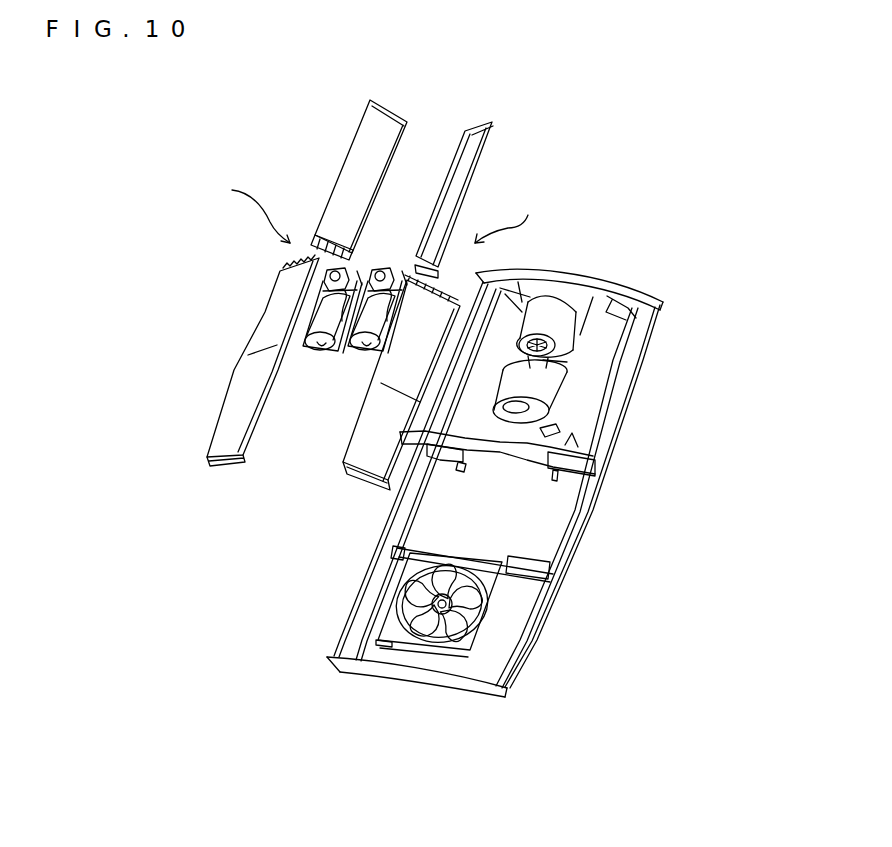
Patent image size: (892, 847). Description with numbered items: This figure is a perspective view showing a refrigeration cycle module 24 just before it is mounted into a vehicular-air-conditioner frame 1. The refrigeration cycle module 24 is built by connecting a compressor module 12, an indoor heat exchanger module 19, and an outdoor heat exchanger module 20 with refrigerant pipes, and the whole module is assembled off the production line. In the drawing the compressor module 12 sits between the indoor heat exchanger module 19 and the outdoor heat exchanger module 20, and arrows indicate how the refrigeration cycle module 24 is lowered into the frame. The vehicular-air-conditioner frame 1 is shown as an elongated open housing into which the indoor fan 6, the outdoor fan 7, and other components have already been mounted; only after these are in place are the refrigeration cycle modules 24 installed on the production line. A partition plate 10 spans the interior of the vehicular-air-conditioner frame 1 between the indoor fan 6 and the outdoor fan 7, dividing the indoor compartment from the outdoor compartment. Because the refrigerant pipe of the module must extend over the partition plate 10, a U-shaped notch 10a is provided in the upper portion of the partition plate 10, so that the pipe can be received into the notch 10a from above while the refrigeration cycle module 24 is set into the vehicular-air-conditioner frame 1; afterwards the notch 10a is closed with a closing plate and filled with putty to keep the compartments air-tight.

The vehicular-air-conditioner frame 1 is at (563, 558).
The indoor fan 6 is at (567, 297).
The outdoor fan 7 is at (470, 633).
The partition plate 10 is at (522, 452).
The notch 10a is at (545, 426).
The compressor module 12 is at (362, 353).
The indoor heat exchanger module 19 is at (345, 162).
The outdoor heat exchanger module 20 is at (233, 390).
The refrigeration cycle module 24 is at (375, 207).